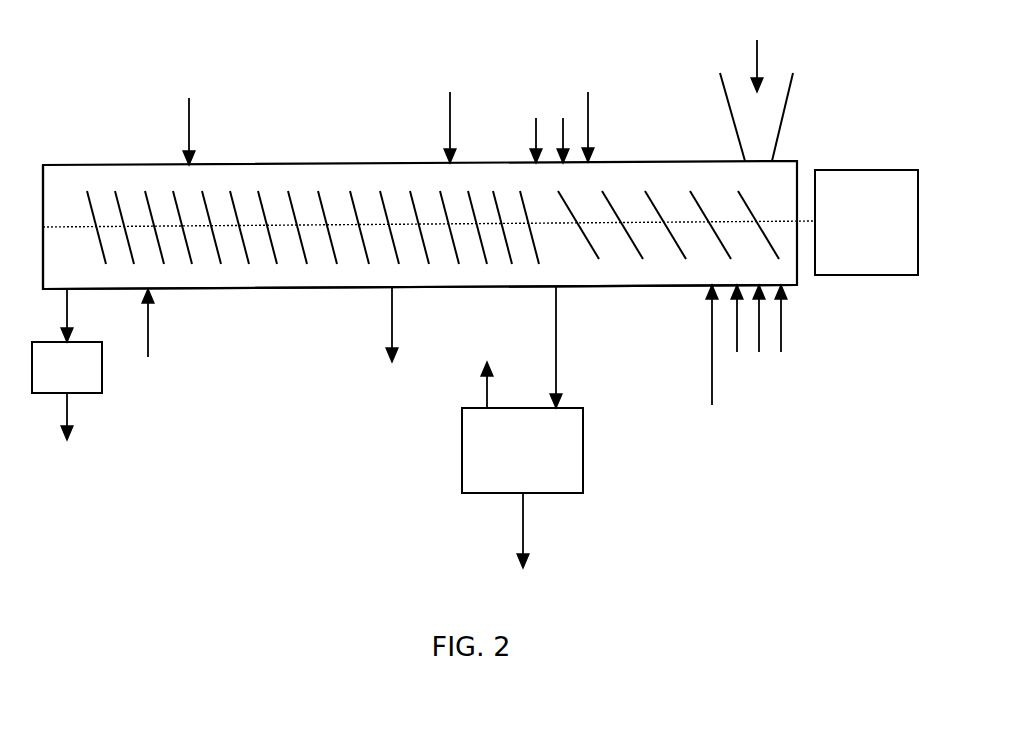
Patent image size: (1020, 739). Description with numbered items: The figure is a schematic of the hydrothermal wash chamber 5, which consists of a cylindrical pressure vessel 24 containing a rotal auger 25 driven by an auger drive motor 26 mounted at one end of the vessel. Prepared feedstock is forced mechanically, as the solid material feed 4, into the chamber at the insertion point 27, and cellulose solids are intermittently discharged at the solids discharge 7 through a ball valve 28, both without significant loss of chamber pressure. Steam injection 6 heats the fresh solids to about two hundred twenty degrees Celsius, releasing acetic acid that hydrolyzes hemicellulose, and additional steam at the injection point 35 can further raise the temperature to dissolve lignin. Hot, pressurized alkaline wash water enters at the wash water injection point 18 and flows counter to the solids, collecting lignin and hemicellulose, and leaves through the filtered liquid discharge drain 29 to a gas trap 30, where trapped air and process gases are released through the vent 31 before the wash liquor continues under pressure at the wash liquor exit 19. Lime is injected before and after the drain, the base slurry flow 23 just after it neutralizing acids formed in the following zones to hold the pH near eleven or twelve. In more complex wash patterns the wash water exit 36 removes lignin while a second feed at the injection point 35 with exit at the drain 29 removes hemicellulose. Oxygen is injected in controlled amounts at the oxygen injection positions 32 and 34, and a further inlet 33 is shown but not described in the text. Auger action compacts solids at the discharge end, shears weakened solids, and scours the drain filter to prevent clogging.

The forced insertion of solid material 4 is at (752, 55).
The hydrothermal wash chamber 5 is at (420, 227).
The steam injection 6 is at (759, 335).
The solids discharge 7 is at (67, 431).
The wash water injection point 18 is at (148, 339).
The wash liquor exit 19 is at (525, 546).
The base slurry flow 23 is at (549, 129).
The cylindrical pressure vessel 24 is at (420, 208).
The rotal auger 25 is at (429, 227).
The auger drive motor 26 is at (866, 222).
The solids insertion point 27 is at (733, 117).
The ball valve 28 is at (67, 341).
The liquid discharge drain 29 is at (575, 347).
The gas trap 30 is at (522, 450).
The vent 31 is at (492, 374).
The oxygen injection position 32 is at (185, 120).
The inlet 33 is at (716, 361).
The oxygen injection position 34 is at (450, 116).
The additional steam or wash water injection point 35 is at (588, 116).
The wash water exit 36 is at (392, 337).